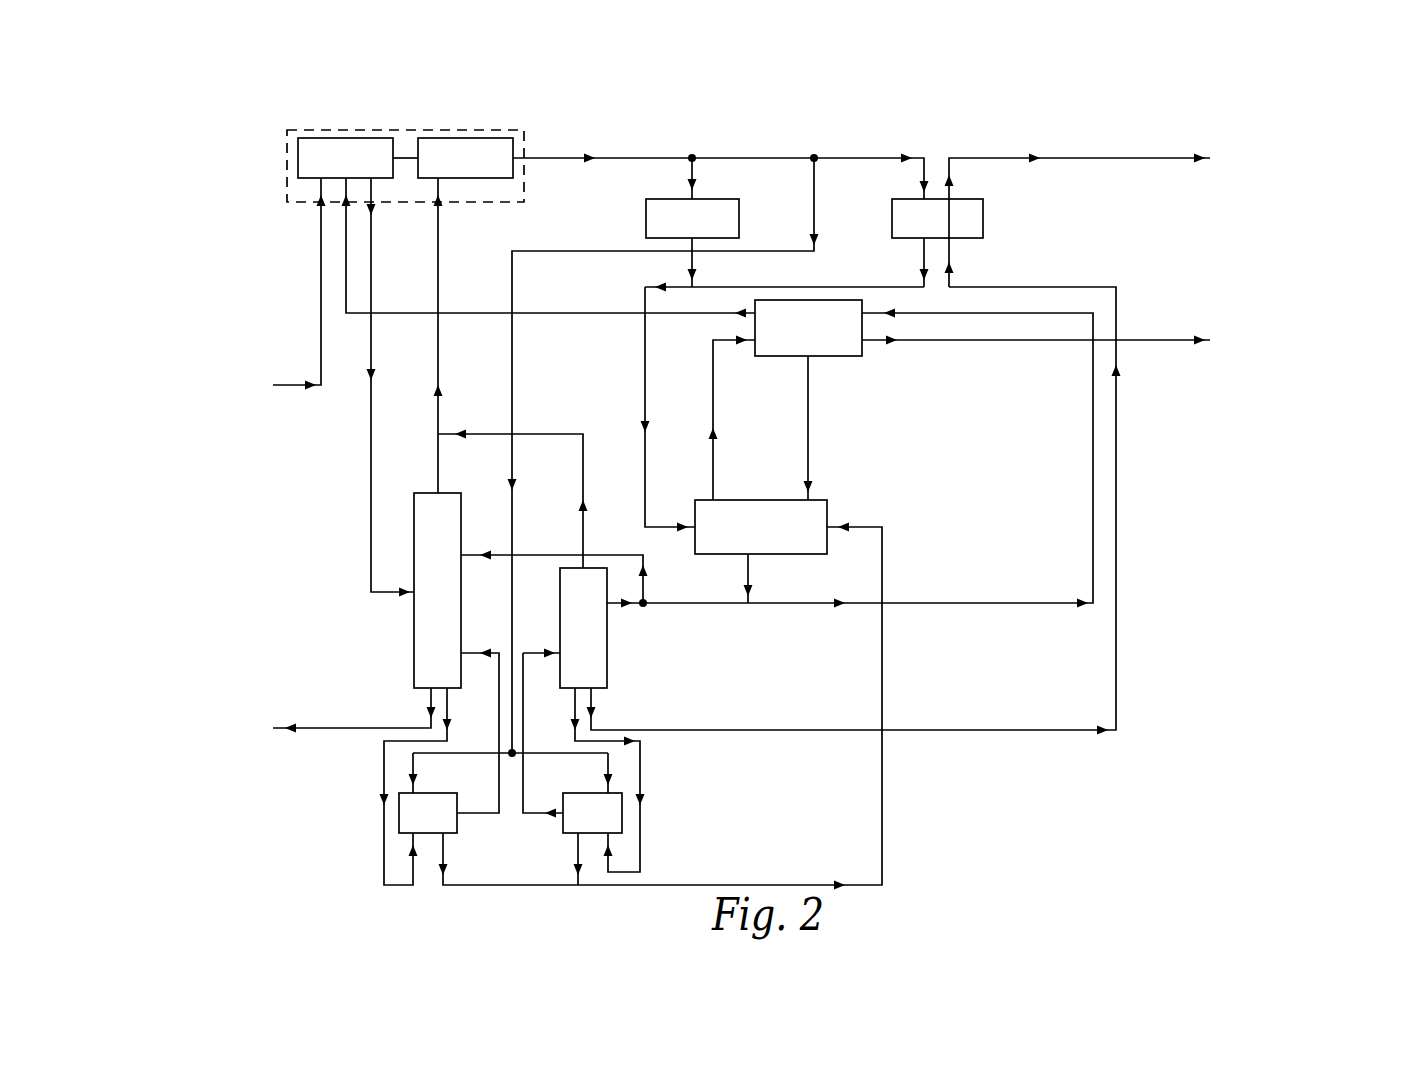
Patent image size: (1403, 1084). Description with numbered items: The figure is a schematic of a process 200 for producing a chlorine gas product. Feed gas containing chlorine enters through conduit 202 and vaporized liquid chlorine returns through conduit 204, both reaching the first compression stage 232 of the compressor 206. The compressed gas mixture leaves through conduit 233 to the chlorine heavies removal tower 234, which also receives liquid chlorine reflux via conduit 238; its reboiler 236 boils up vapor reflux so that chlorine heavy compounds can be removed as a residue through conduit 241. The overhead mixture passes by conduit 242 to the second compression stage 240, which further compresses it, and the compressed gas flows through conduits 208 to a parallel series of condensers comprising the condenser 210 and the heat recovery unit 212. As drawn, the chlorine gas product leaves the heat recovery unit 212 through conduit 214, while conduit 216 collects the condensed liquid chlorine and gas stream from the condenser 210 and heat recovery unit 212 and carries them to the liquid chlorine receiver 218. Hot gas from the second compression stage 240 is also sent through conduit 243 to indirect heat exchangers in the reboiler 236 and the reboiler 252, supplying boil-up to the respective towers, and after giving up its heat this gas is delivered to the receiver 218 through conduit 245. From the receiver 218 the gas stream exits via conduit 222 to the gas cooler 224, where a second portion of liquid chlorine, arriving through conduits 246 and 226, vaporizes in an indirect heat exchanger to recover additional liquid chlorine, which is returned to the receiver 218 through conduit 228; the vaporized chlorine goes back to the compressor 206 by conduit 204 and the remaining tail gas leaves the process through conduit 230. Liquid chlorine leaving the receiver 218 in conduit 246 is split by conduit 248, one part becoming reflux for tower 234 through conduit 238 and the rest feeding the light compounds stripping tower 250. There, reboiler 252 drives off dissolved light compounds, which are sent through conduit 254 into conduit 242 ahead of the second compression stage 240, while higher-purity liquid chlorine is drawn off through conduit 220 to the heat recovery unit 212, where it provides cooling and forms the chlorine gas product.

The process 200 is at (1325, 139).
The conduit 202 is at (295, 284).
The conduit 204 is at (549, 253).
The compressor 206 is at (282, 141).
The conduits 208 is at (721, 157).
The condenser 210 is at (673, 235).
The heat recovery unit 212 is at (918, 235).
The product stream 214 is at (1078, 202).
The effluent stream 216 is at (785, 385).
The liquid chlorine receiver 218 is at (742, 542).
The conduit 220 is at (880, 511).
The conduit 222 is at (740, 418).
The gas cooler 224 is at (789, 343).
The conduit 226 is at (868, 478).
The conduit 228 is at (835, 428).
The conduit 230 is at (1036, 355).
The first compression stage 232 is at (327, 174).
The conduit 233 is at (364, 387).
The chlorine heavies removal tower 234 is at (418, 607).
The reboiler 236 is at (409, 828).
The conduit 238 is at (552, 542).
The second compression stage 240 is at (447, 174).
The conduit 241 is at (354, 713).
The conduit 242 is at (412, 335).
The conduit 243 is at (690, 455).
The conduit 245 is at (661, 712).
The conduit 246 is at (775, 575).
The conduit 248 is at (587, 599).
The light compounds stripping tower 250 is at (564, 643).
The reboiler 252 is at (573, 828).
The conduit 254 is at (513, 481).